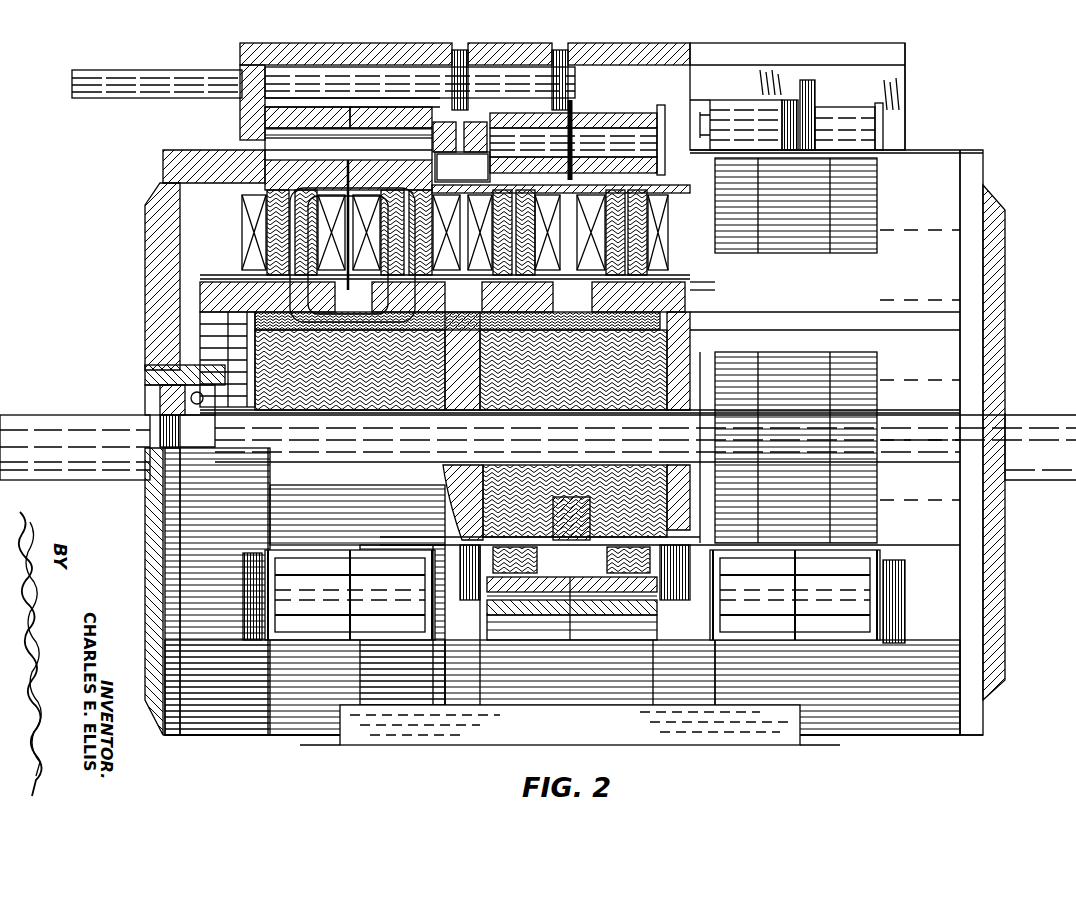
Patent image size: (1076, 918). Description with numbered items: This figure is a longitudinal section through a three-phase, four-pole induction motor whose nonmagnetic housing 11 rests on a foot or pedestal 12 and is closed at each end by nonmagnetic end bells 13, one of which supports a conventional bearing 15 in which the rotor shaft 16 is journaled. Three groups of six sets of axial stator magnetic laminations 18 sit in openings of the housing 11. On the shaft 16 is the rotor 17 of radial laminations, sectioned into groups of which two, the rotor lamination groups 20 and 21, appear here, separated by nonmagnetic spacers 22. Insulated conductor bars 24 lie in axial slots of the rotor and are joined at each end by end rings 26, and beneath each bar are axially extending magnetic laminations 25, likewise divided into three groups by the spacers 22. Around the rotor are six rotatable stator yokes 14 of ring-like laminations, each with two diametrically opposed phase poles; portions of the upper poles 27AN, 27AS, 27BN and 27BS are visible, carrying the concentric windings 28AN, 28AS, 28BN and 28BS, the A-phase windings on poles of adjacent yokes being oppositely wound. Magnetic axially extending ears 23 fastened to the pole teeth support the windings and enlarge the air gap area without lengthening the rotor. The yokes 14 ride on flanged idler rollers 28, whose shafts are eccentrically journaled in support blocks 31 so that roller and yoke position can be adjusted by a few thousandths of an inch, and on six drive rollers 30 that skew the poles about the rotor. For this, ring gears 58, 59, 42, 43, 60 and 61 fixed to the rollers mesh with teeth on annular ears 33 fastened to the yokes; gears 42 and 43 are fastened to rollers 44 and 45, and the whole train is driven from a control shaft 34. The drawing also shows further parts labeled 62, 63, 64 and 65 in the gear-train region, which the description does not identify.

The housing 11 is at (938, 150).
The foot or pedestal 12 is at (384, 745).
The end bells 13 is at (163, 165).
The stator yoke 14 is at (650, 553).
The bearing 15 is at (145, 396).
The rotor shaft 16 is at (36, 410).
The rotor 17 is at (198, 328).
The axial stator magnetic laminations 18 is at (284, 736).
The rotor lamination group 20 is at (250, 410).
The rotor lamination group 21 is at (680, 342).
The nonmagnetic spacers 22 is at (440, 408).
The axially extending ears 23 is at (255, 283).
The insulated conductor bars 24 is at (672, 300).
The axially extending magnetic laminations 25 is at (690, 325).
The end rings 26 is at (204, 288).
The phase pole 27AN is at (265, 222).
The winding 28AN is at (243, 244).
The winding 28AS is at (462, 167).
The winding 28BN is at (462, 167).
The winding 28BS is at (690, 268).
The phase pole 27BS is at (690, 284).
The phase pole 27AS is at (457, 332).
The phase pole 27BN is at (580, 362).
The idler rollers 28 is at (915, 598).
The drive rollers 30 is at (892, 108).
The support blocks 31 is at (252, 640).
The annular ears 33 is at (290, 192).
The control shaft 34 is at (90, 72).
The ring gear 42 is at (572, 108).
The ring gear 43 is at (600, 112).
The roller 44 is at (470, 95).
The roller 45 is at (640, 112).
The ring gear 58 is at (345, 105).
The ring gear 59 is at (362, 105).
The ring gear 60 is at (790, 102).
The ring gear 61 is at (815, 105).
The bearing block 62 is at (240, 112).
The gear 63 is at (418, 100).
The shaft 64 is at (748, 106).
The shaft 65 is at (856, 106).